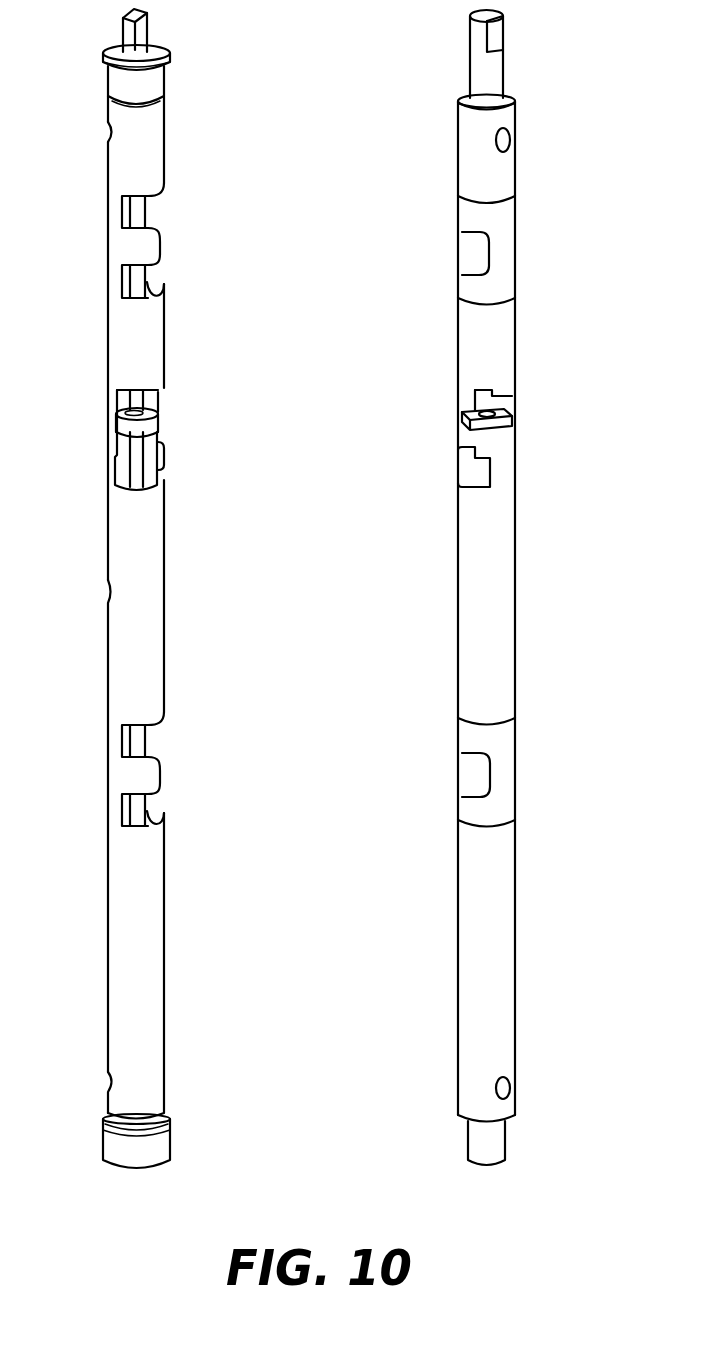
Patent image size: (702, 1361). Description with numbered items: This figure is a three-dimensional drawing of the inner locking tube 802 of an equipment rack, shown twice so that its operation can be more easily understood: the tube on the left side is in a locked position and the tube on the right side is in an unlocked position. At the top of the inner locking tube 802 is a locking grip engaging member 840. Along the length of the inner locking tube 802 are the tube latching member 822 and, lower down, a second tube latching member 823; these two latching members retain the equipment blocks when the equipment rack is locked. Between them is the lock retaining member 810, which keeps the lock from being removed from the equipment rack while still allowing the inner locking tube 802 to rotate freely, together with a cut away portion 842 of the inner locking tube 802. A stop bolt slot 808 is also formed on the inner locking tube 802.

The locking grip engaging member 840 is at (150, 33).
The tube latching member 822 is at (133, 245).
The inner locking tube 802 is at (133, 347).
The lock retaining member 810 is at (160, 410).
The cut away portion 842 is at (160, 470).
The stop bolt slot 808 is at (108, 593).
The second tube latching member 823 is at (133, 775).